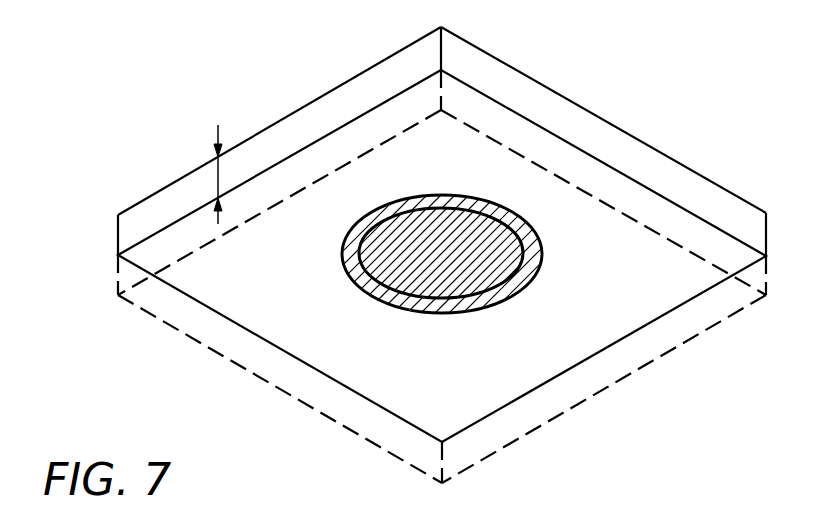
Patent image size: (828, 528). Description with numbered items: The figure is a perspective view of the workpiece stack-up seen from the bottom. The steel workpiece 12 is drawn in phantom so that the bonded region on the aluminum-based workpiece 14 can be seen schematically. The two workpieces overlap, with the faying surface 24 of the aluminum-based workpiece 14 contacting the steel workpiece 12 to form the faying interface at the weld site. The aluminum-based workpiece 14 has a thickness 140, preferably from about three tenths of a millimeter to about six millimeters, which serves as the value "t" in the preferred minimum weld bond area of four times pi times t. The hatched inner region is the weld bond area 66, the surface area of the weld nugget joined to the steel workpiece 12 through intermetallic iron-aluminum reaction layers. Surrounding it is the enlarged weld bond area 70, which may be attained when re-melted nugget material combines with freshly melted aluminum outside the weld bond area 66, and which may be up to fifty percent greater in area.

The steel workpiece 12 is at (260, 380).
The aluminum-based workpiece 14 is at (118, 237).
The faying surface 24 is at (215, 313).
The weld bond area 66 is at (520, 272).
The enlarged weld bond area 70 is at (403, 308).
The thickness 140 is at (214, 178).